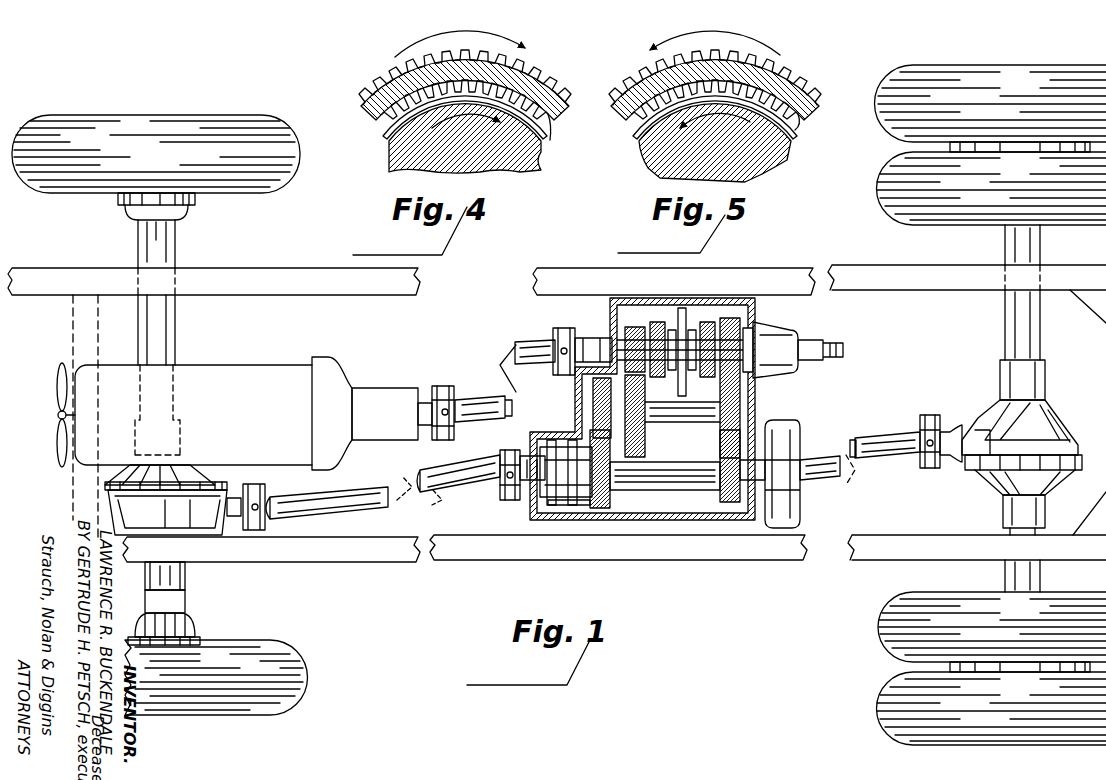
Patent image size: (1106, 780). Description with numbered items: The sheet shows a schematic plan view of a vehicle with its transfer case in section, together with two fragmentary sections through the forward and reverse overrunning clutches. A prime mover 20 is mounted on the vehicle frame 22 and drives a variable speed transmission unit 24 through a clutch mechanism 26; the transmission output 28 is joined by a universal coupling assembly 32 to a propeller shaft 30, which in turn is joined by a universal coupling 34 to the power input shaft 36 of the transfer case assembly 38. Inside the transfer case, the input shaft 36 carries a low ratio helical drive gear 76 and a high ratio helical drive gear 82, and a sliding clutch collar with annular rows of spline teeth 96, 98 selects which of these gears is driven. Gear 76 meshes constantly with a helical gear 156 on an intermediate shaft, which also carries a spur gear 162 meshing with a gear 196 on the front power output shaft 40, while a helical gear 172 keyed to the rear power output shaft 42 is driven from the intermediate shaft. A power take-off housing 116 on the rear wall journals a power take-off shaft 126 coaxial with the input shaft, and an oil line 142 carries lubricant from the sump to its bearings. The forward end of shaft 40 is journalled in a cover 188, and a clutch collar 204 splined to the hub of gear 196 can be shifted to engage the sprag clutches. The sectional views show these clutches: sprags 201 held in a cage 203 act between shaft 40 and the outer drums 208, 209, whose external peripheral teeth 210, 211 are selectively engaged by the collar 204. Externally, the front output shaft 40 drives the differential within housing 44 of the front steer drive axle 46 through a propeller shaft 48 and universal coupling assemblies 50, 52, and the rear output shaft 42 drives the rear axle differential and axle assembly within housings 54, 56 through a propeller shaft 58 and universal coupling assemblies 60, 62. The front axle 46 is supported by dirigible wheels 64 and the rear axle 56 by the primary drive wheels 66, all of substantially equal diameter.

In FIG. 1, the prime mover 20 is at (232, 388).
In FIG. 1, the vehicle frame 22 is at (356, 290).
In FIG. 1, the variable speed transmission unit 24 is at (374, 392).
In FIG. 1, the clutch mechanism 26 is at (332, 372).
In FIG. 1, the output 28 is at (425, 400).
In FIG. 1, the propeller shaft 30 is at (498, 400).
In FIG. 1, the universal coupling assembly 32 is at (442, 388).
In FIG. 1, the universal coupling 34 is at (548, 345).
In FIG. 1, the power input shaft 36 is at (572, 343).
In FIG. 1, the transfer case assembly 38 is at (605, 304).
In FIG. 1, the front power output shaft 40 is at (515, 495).
In FIG. 4, the front power output shaft 40 is at (395, 157).
In FIG. 5, the front power output shaft 40 is at (775, 160).
In FIG. 1, the rear power output shaft 42 is at (660, 492).
In FIG. 1, the housing 44 is at (176, 526).
In FIG. 1, the front steer drive axle 46 is at (170, 248).
In FIG. 1, the propeller shaft 48 is at (420, 474).
In FIG. 1, the universal coupling assembly 50 is at (315, 495).
In FIG. 1, the universal coupling assembly 52 is at (500, 460).
In FIG. 1, the rear axle differential housing 54 is at (1040, 428).
In FIG. 1, the rear axle 56 is at (1035, 340).
In FIG. 1, the propeller shaft 58 is at (880, 440).
In FIG. 1, the universal coupling assembly 60 is at (932, 418).
In FIG. 1, the universal coupling assembly 62 is at (790, 440).
In FIG. 1, the dirigible wheels 64 is at (165, 135).
In FIG. 1, the primary drive wheels 66 is at (885, 168).
In FIG. 1, the low ratio helical drive gear 76 is at (638, 328).
In FIG. 1, the high ratio helical drive gear 82 is at (748, 330).
In FIG. 1, the spline teeth 96 is at (662, 322).
In FIG. 1, the spline teeth 98 is at (683, 330).
In FIG. 1, the power take-off housing 116 is at (785, 340).
In FIG. 1, the power take-off shaft 126 is at (822, 345).
In FIG. 1, the oil line 142 is at (760, 415).
In FIG. 1, the helical gear 156 is at (645, 440).
In FIG. 1, the spur gear 162 is at (590, 380).
In FIG. 1, the helical gear 172 is at (730, 500).
In FIG. 1, the cover 188 is at (560, 520).
In FIG. 1, the gear 196 is at (600, 510).
In FIG. 1, the clutch collar 204 is at (548, 505).
In FIG. 4, the sprags 201 is at (562, 110).
In FIG. 5, the sprags 201 is at (812, 113).
In FIG. 4, the cage 203 is at (545, 125).
In FIG. 5, the cage 203 is at (795, 130).
In FIG. 4, the outer drum 208 is at (545, 88).
In FIG. 5, the outer drum 209 is at (785, 88).
In FIG. 4, the peripheral teeth 210 is at (520, 72).
In FIG. 5, the peripheral teeth 211 is at (812, 100).